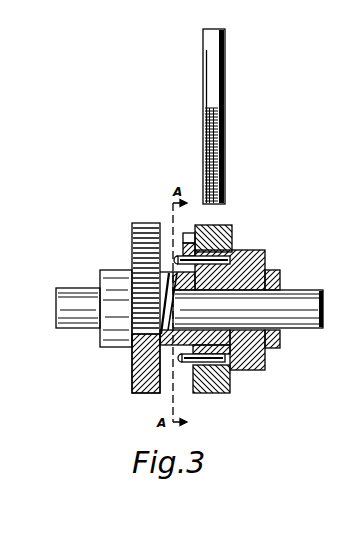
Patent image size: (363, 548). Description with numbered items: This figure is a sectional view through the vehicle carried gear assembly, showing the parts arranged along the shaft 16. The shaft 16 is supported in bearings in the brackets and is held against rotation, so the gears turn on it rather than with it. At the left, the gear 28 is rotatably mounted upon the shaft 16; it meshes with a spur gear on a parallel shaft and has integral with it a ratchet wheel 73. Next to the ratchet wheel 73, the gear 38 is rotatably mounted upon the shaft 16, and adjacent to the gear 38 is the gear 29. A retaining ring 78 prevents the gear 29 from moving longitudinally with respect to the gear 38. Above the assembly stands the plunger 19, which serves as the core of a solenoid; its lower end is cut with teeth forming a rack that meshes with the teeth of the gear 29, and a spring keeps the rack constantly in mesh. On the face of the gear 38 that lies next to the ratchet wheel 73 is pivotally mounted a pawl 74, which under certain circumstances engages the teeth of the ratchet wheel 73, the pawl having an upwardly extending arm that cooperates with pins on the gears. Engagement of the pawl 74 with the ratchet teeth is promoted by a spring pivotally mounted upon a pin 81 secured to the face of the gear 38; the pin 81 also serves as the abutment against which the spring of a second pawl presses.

The plunger 19 is at (228, 100).
The shaft 16 is at (324, 312).
The gear 28 is at (140, 393).
The gear 38 is at (265, 260).
The gear 29 is at (232, 230).
The pawl 74 is at (190, 233).
The retaining ring 78 is at (265, 355).
The ratchet wheel 73 is at (183, 362).
The pin 81 is at (218, 392).